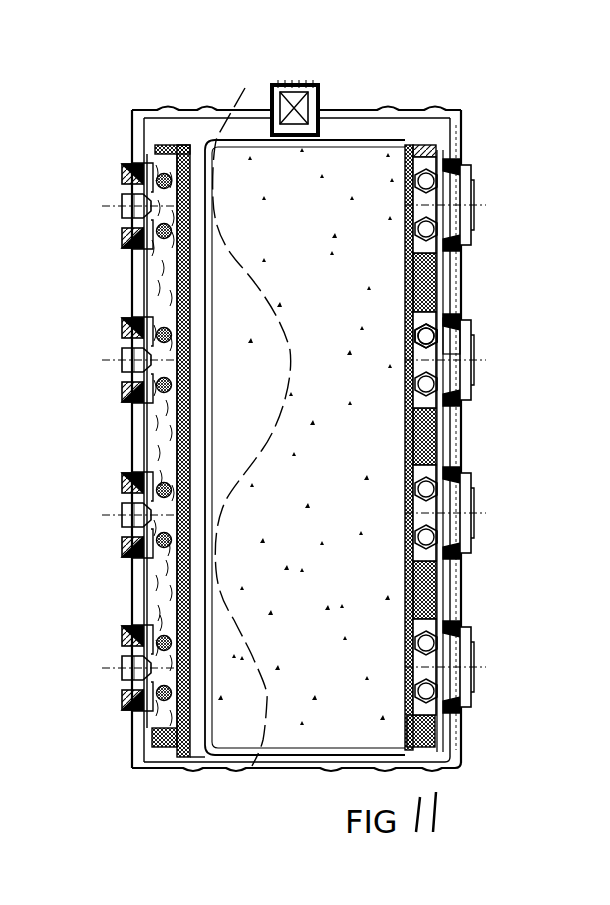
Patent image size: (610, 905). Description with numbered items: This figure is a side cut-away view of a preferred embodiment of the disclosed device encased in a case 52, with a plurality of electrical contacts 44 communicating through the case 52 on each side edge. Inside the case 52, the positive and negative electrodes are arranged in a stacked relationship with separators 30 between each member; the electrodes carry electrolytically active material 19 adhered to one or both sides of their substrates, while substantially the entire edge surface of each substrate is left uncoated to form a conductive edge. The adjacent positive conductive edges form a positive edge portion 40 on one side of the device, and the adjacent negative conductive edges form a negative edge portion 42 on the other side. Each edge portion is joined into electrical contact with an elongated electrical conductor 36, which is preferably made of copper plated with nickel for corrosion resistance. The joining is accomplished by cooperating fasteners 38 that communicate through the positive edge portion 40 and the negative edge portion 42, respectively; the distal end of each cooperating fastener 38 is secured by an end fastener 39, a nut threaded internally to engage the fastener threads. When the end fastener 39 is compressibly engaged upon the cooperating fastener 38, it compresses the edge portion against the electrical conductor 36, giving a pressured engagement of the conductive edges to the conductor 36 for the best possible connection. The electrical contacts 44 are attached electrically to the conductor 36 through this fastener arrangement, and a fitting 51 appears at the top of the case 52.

The mounting bracket 51 is at (297, 85).
The case 52 is at (463, 128).
The electrical contacts 44 is at (122, 208).
The end fastener 39 is at (427, 324).
The cooperating fastener 38 is at (452, 342).
The negative edge portion 42 is at (455, 752).
The electrolytically active material 19 is at (392, 590).
The separator 30 is at (205, 755).
The positive edge portion 40 is at (157, 766).
The electrical conductor 36 is at (160, 440).